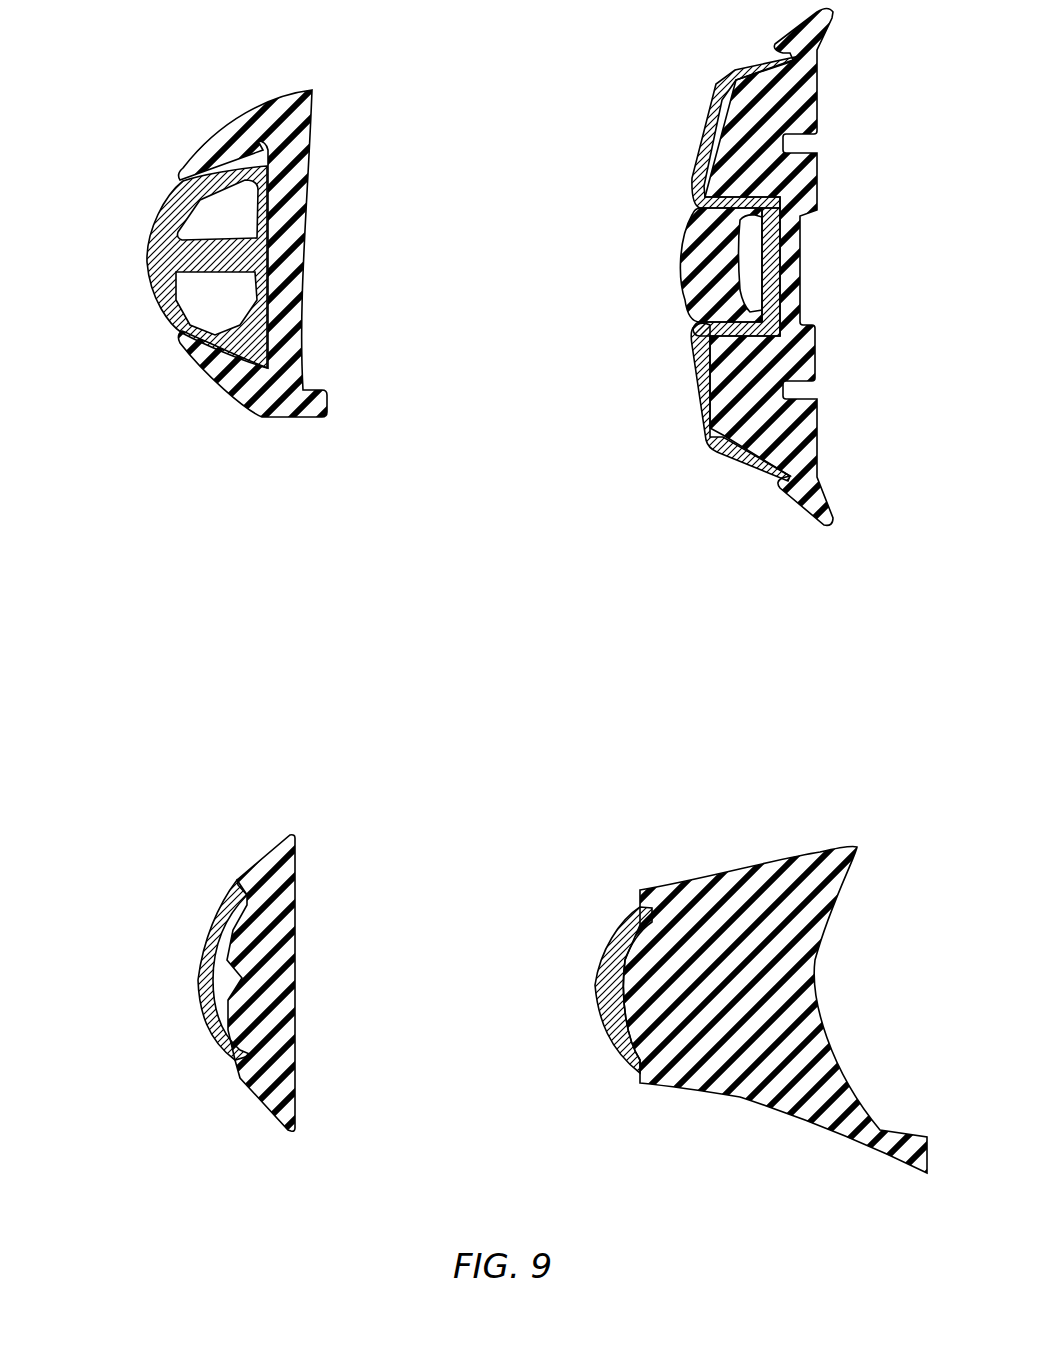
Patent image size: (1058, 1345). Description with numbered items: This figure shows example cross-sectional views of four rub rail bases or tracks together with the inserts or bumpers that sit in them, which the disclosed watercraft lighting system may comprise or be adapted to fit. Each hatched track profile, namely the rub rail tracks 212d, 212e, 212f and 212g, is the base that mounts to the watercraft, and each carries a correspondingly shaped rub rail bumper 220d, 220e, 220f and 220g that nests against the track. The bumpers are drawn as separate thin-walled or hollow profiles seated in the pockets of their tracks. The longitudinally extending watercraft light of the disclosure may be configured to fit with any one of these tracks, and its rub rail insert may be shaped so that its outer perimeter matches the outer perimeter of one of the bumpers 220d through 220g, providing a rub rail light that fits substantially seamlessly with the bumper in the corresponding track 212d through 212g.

The rub rail track 212d is at (298, 177).
The rub rail bumper 220d is at (148, 262).
The rub rail track 212e is at (815, 183).
The rub rail bumper 220e is at (677, 277).
The rub rail track 212f is at (295, 963).
The rub rail bumper 220f is at (200, 1007).
The rub rail track 212g is at (815, 963).
The rub rail bumper 220g is at (597, 1005).